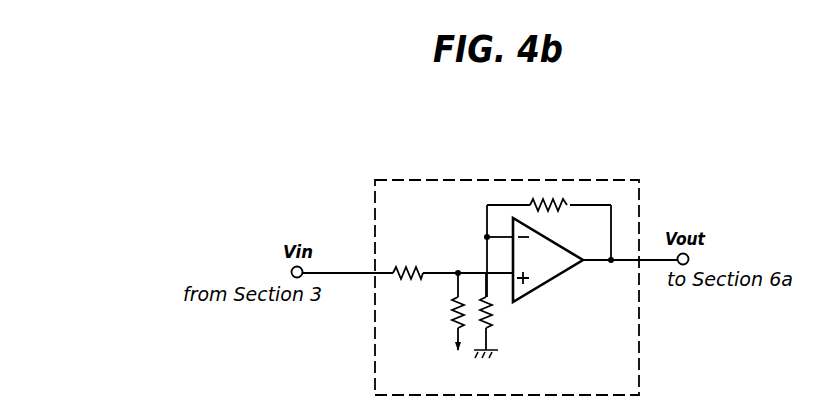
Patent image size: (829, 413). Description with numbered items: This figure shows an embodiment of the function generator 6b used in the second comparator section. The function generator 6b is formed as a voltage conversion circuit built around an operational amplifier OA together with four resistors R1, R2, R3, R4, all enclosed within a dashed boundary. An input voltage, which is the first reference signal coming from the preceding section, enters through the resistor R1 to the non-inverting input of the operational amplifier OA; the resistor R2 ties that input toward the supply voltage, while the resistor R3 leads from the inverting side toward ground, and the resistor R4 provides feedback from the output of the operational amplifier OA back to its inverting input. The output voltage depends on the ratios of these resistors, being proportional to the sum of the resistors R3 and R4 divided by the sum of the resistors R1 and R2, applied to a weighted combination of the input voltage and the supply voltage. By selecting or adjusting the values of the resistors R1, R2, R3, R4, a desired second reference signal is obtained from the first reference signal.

The function generator 6b is at (592, 180).
The resistor R1 is at (408, 263).
The resistor R2 is at (441, 324).
The resistor R3 is at (496, 315).
The resistor R4 is at (549, 229).
The operational amplifier OA is at (567, 270).